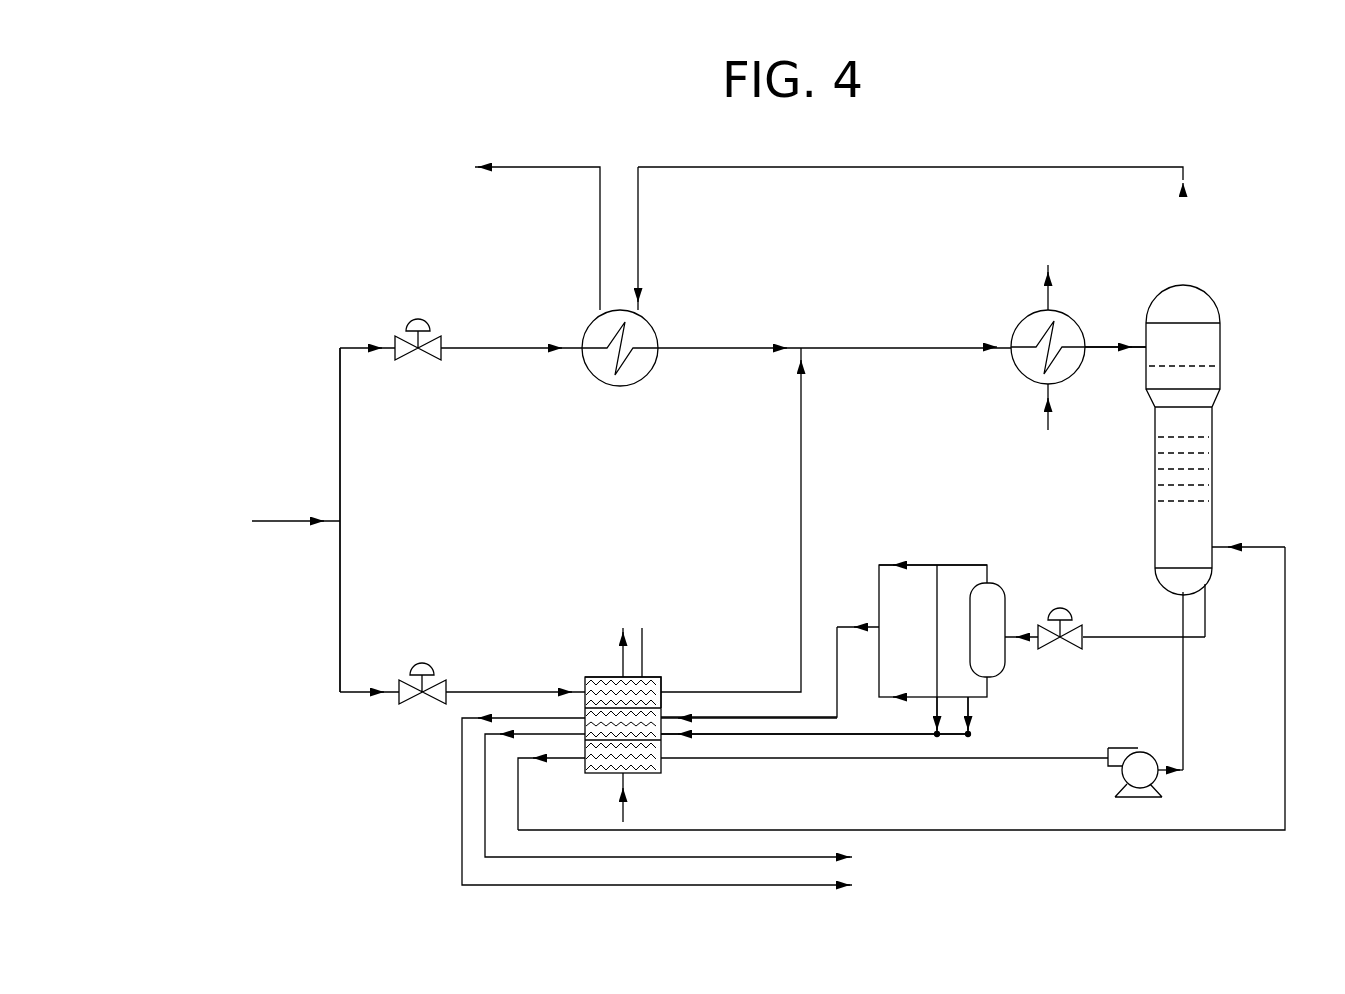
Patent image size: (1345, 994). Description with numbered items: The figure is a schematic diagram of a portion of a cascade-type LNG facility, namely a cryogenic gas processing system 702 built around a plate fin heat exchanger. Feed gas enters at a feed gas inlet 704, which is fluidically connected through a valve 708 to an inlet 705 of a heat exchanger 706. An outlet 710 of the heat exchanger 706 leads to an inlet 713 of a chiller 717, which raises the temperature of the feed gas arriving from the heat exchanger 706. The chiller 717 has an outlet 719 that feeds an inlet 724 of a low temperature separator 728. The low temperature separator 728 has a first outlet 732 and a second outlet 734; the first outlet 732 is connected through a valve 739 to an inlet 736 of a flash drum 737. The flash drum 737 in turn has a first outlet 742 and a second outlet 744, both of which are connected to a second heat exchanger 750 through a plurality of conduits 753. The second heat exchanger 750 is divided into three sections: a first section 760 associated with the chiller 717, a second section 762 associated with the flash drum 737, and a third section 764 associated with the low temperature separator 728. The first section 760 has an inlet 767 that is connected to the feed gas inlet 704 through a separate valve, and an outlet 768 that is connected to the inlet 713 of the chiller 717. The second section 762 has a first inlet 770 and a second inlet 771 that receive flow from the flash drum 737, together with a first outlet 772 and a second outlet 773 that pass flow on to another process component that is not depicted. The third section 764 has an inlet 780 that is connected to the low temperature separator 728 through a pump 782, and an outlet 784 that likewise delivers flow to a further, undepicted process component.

The cryogenic gas processing system 702 is at (334, 240).
The feed gas inlet 704 is at (290, 520).
The inlet 705 is at (585, 336).
The heat exchanger 706 is at (646, 392).
The valve 708 is at (420, 362).
The outlet 710 is at (656, 332).
The inlet 713 is at (1013, 340).
The chiller 717 is at (1075, 392).
The outlet 719 is at (1094, 342).
The inlet 724 is at (1146, 344).
The low temperature separator 728 is at (1222, 297).
The first outlet 732 is at (1208, 602).
The second outlet 734 is at (1182, 602).
The inlet 736 is at (1005, 600).
The flash drum 737 is at (1058, 683).
The valve 739 is at (1075, 651).
The first outlet 742 is at (985, 564).
The second outlet 744 is at (989, 678).
The second heat exchanger 750 is at (583, 664).
The plurality of conduits 753 is at (860, 588).
The first section 760 is at (643, 664).
The second section 762 is at (631, 750).
The third section 764 is at (580, 780).
The inlet 767 is at (583, 688).
The outlet 768 is at (664, 690).
The first inlet 770 is at (664, 712).
The second inlet 771 is at (664, 738).
The first outlet 772 is at (583, 716).
The second outlet 773 is at (582, 733).
The inlet 780 is at (664, 760).
The pump 782 is at (1117, 778).
The outlet 784 is at (583, 755).